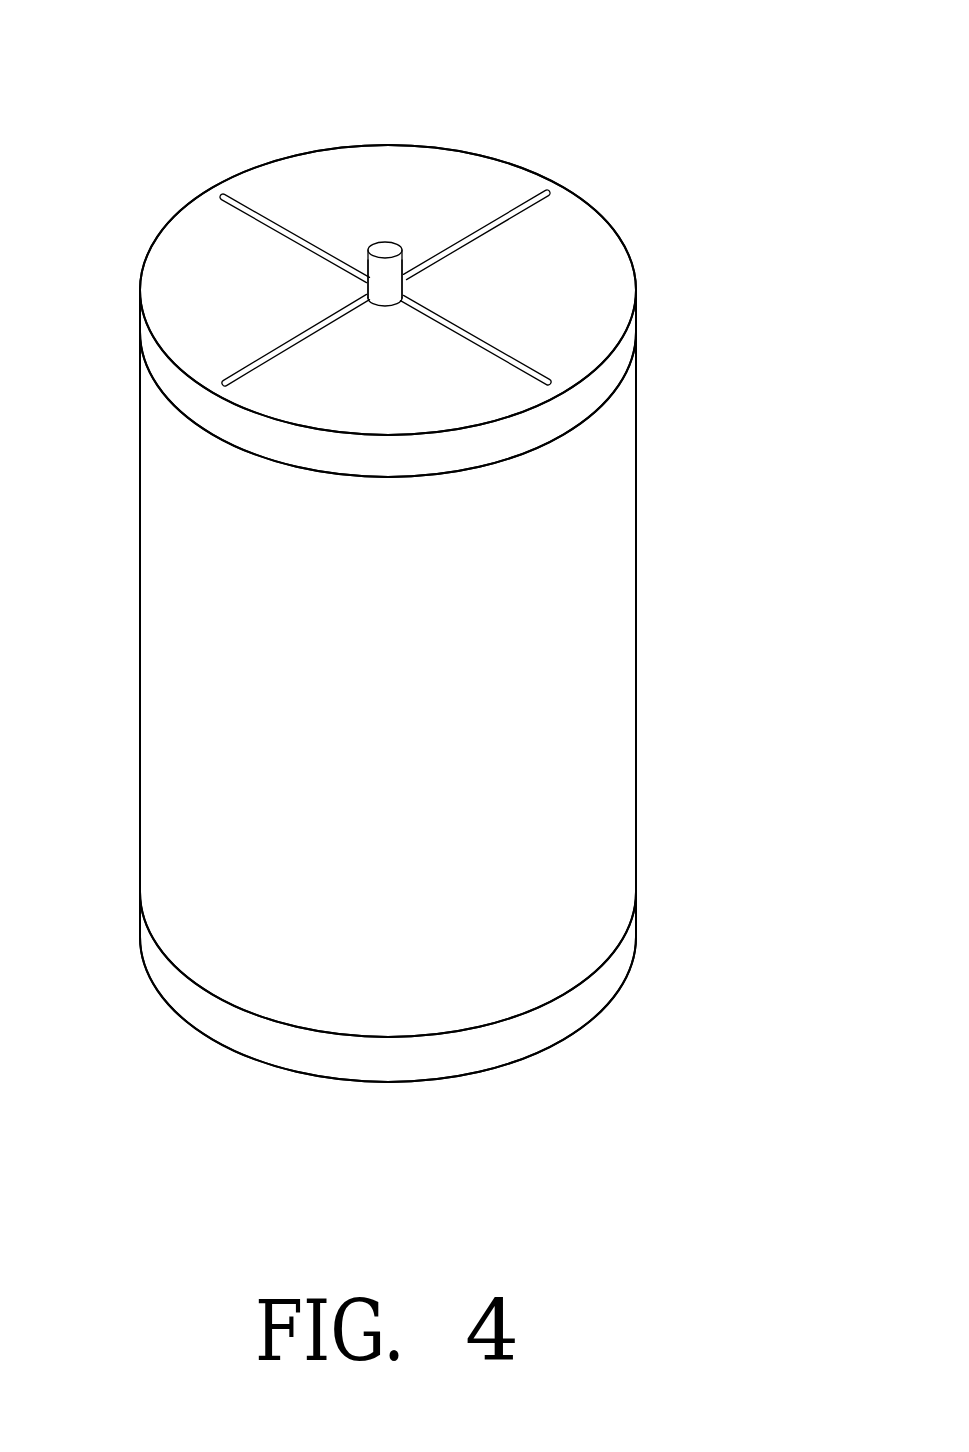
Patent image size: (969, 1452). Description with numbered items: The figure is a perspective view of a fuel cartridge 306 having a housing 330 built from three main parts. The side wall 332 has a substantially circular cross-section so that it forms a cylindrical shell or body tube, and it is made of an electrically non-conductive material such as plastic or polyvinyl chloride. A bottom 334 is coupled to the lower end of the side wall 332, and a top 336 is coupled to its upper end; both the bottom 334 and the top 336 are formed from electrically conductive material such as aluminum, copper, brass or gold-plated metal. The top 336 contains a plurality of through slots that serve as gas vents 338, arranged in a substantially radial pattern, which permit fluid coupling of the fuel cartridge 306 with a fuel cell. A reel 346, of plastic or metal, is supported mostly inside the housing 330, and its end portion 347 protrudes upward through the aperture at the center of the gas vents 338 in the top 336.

The fuel cartridge 306 is at (733, 70).
The housing 330 is at (675, 502).
The side wall 332 is at (167, 649).
The bottom 334 is at (215, 1017).
The top 336 is at (338, 165).
The gas vents 338 is at (237, 198).
The reel 346 is at (383, 245).
The end portion 347 is at (392, 273).